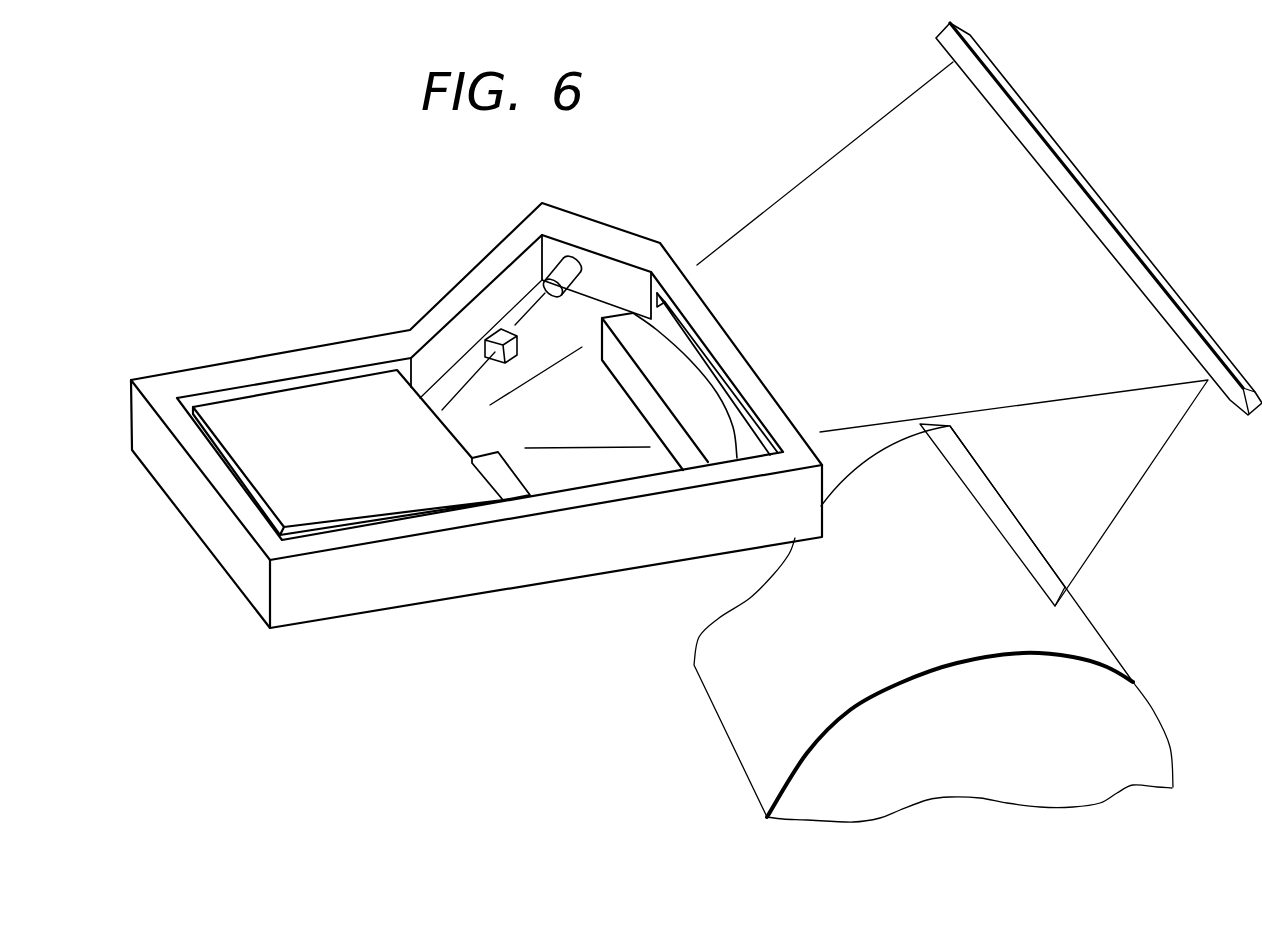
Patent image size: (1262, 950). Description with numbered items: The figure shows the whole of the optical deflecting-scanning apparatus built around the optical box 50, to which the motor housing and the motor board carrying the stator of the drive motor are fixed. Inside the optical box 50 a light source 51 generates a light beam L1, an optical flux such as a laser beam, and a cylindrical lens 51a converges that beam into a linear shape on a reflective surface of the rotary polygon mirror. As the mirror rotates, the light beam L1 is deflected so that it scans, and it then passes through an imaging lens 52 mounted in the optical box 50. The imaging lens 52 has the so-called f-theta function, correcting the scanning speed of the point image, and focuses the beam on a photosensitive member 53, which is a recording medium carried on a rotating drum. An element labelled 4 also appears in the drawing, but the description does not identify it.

The circuit board 4 is at (292, 488).
The optical box 50 is at (463, 568).
The light source 51 is at (570, 262).
The cylindrical lens 51a is at (503, 332).
The imaging lens 52 is at (713, 447).
The photosensitive member 53 is at (810, 800).
The light beam L1 is at (813, 190).